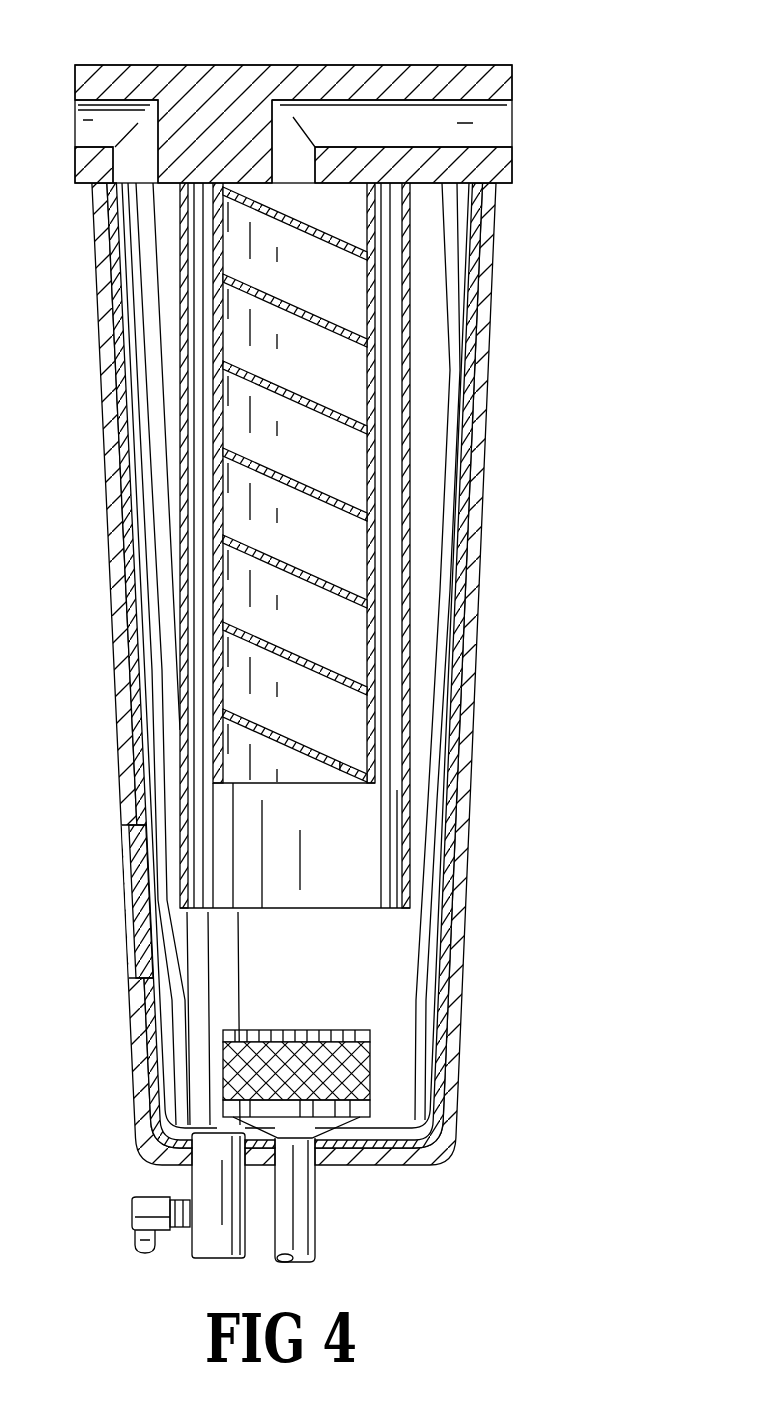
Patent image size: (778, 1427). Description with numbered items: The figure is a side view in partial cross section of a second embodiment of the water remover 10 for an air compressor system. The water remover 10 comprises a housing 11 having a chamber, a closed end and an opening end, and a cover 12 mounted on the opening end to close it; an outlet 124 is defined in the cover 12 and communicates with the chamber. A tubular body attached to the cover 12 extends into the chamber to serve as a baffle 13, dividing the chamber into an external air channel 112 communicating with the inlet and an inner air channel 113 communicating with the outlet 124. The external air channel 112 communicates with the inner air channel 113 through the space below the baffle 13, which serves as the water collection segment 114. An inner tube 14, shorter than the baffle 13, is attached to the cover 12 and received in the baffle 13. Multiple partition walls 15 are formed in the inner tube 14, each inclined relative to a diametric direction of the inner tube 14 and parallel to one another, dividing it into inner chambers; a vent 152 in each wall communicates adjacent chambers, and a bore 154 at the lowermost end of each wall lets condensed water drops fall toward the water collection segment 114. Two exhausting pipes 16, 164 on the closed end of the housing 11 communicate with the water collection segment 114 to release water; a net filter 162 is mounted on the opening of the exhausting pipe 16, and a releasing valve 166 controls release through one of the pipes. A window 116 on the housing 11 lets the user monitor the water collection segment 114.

The water remover 10 is at (492, 579).
The housing 11 is at (465, 720).
The cover 12 is at (436, 58).
The baffle 13 is at (410, 483).
The inner tube 14 is at (373, 302).
The partition wall 15 is at (305, 580).
The exhausting pipe 16 is at (300, 1210).
The external air channel 112 is at (445, 382).
The inner air channel 113 is at (383, 843).
The water collection segment 114 is at (405, 975).
The window 116 is at (138, 878).
The outlet 124 is at (500, 127).
The vent 152 is at (294, 806).
The bore 154 is at (362, 787).
The net filter 162 is at (352, 1074).
The exhausting pipe 164 is at (212, 1153).
The releasing valve 166 is at (157, 1210).